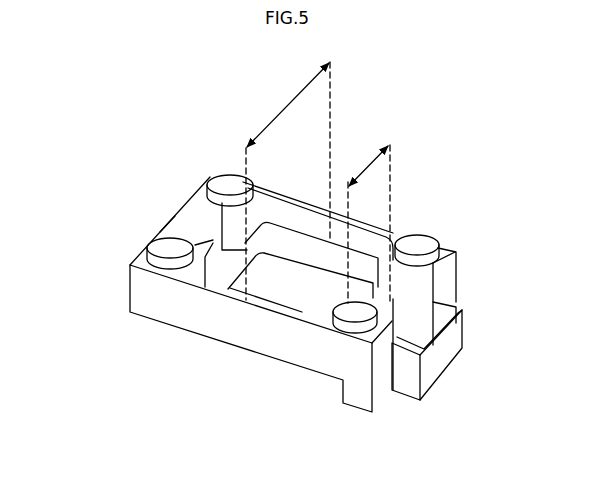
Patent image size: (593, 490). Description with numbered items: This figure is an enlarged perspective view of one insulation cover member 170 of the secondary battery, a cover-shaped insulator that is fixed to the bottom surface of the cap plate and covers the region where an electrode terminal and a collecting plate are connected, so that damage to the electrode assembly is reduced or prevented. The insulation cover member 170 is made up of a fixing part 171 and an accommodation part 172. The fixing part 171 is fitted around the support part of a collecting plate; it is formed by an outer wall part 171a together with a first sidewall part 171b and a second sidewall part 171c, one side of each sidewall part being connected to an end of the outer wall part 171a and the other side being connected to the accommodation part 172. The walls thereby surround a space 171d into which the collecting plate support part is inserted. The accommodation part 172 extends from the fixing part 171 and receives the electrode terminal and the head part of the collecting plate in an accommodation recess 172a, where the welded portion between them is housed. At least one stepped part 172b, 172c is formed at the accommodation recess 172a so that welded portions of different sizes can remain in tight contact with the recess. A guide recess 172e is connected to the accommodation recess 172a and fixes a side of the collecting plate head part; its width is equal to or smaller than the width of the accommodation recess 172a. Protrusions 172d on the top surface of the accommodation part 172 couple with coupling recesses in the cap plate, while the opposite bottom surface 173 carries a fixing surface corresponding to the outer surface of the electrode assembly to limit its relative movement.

The insulation cover member 170 is at (80, 166).
The fixing part 171 is at (393, 403).
The outer wall part 171a is at (443, 350).
The first sidewall part 171b is at (442, 317).
The second sidewall part 171c is at (437, 384).
The space 171d is at (433, 273).
The accommodation part 172 is at (136, 321).
The accommodation recess 172a is at (290, 297).
The stepped part 172b is at (213, 177).
The stepped part 172c is at (182, 221).
The protrusion 172d is at (160, 250).
The guide recess 172e is at (406, 231).
The bottom surface 173 is at (183, 329).